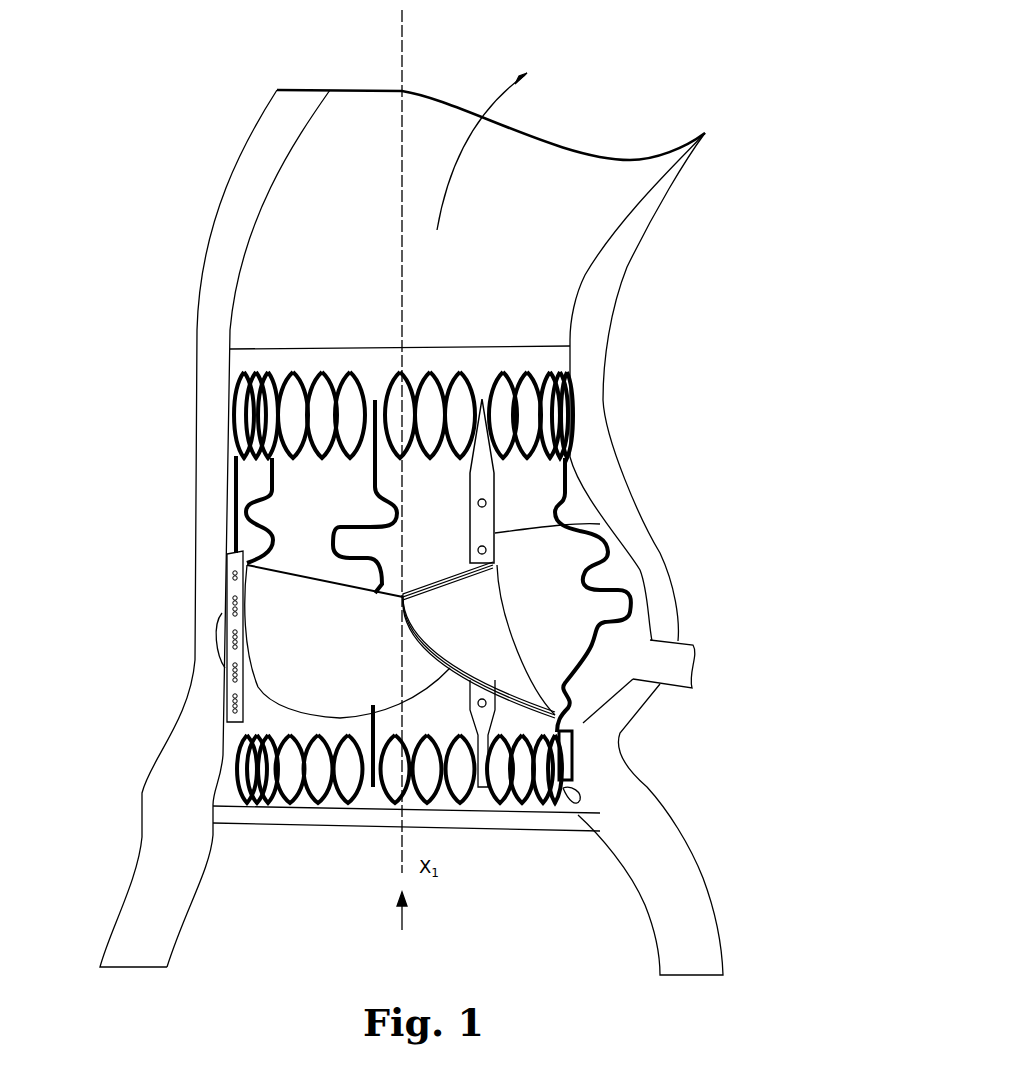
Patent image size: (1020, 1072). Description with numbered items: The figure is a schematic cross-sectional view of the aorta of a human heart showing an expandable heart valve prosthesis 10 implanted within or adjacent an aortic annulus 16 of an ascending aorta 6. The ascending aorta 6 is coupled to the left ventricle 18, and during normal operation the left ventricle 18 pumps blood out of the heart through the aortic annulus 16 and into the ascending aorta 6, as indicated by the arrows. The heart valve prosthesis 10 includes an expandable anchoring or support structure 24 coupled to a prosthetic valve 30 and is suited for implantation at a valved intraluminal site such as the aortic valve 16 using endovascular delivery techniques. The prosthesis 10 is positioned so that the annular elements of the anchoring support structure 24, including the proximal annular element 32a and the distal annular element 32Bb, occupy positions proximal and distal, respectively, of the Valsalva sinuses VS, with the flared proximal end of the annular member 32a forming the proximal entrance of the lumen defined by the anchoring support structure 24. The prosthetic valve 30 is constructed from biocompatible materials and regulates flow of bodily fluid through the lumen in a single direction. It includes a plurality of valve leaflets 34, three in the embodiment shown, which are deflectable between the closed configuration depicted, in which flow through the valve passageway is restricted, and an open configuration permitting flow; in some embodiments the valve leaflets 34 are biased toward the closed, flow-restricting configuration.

The ascending aorta 6 is at (672, 177).
The expandable heart valve prosthesis 10 is at (222, 588).
The aortic annulus 16 is at (226, 840).
The left ventricle 18 is at (713, 910).
The anchoring support structure 24 is at (600, 524).
The prosthetic valve 30 is at (580, 727).
The annular element 32a is at (573, 762).
The upper (outflow) stent section 32Bb is at (575, 412).
The valve leaflets 34 is at (300, 575).
The Valsalva sinuses VS is at (637, 573).